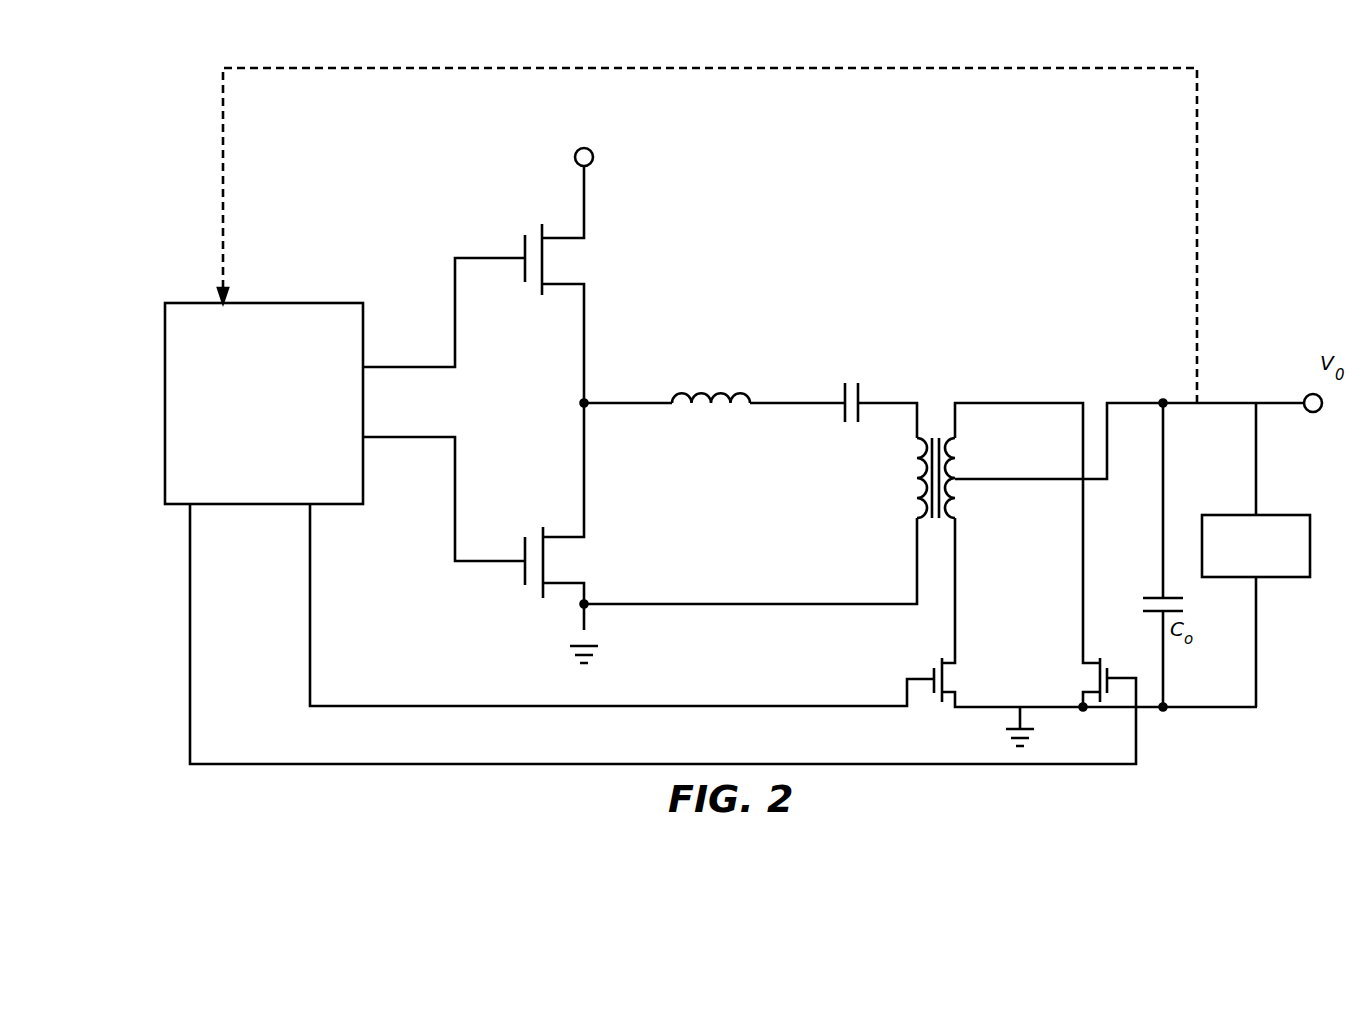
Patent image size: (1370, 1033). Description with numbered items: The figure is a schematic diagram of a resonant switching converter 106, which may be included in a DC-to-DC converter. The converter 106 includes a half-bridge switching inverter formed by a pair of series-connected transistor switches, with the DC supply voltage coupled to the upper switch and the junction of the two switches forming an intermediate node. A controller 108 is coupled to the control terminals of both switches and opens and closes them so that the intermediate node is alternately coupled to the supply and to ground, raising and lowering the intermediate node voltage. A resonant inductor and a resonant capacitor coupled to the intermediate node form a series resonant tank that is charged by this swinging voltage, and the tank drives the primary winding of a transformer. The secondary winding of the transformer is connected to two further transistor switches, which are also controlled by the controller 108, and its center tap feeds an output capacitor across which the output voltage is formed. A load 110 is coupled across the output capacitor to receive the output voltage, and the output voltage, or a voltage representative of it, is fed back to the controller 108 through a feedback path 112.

The resonant switching converter 106 is at (1000, 217).
The controller 108 is at (268, 456).
The load 110 is at (1293, 577).
The feedback path 112 is at (757, 68).